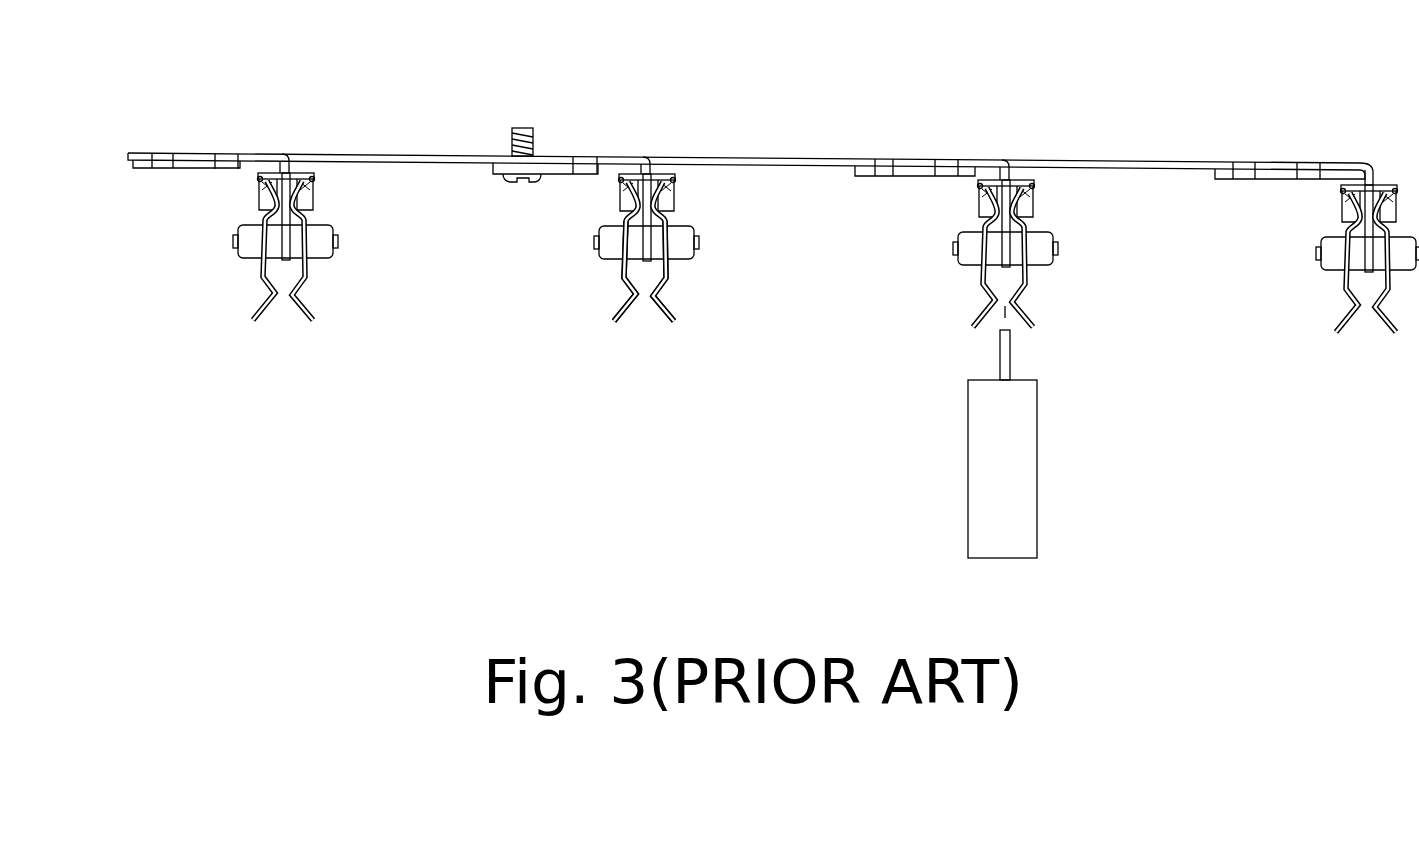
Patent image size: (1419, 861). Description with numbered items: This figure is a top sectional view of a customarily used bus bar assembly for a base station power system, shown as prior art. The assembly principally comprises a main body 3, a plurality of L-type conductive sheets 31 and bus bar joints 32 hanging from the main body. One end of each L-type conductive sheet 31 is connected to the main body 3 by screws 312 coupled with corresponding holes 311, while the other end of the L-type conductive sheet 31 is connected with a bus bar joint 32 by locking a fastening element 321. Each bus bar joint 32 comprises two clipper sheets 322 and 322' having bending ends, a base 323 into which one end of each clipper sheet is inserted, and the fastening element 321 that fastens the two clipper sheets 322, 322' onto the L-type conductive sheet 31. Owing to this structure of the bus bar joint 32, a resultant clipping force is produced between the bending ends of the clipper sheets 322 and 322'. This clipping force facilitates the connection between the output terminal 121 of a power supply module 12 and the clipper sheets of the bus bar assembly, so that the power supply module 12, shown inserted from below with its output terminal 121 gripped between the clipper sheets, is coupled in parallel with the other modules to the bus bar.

The main body 3 is at (1165, 162).
The L-type conductive sheet 31 is at (972, 172).
The hole 311 is at (588, 162).
The screw 312 is at (508, 182).
The bus bar joint 32 is at (667, 272).
The fastening element 321 is at (697, 247).
The clipper sheet 322 is at (750, 317).
The clipper sheet 322' is at (599, 333).
The base 323 is at (628, 196).
The power supply module 12 is at (1015, 477).
The output terminal 121 is at (1017, 353).